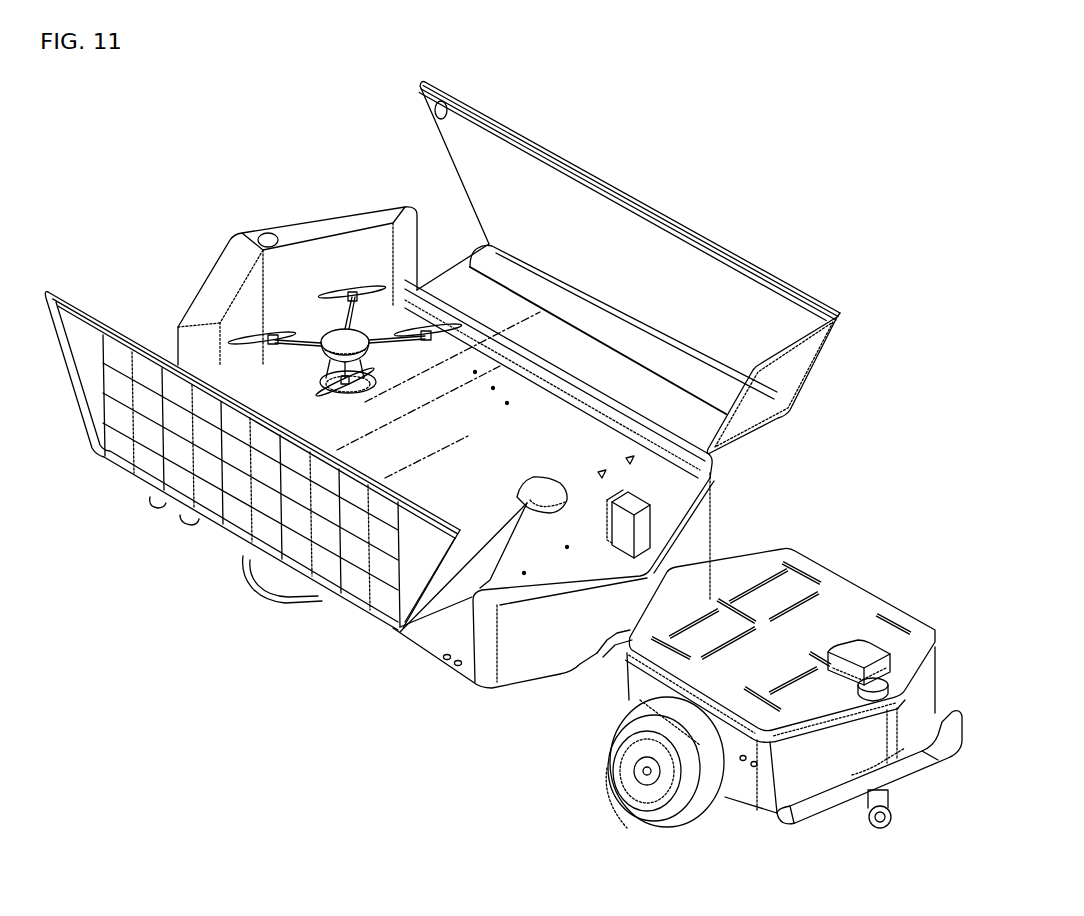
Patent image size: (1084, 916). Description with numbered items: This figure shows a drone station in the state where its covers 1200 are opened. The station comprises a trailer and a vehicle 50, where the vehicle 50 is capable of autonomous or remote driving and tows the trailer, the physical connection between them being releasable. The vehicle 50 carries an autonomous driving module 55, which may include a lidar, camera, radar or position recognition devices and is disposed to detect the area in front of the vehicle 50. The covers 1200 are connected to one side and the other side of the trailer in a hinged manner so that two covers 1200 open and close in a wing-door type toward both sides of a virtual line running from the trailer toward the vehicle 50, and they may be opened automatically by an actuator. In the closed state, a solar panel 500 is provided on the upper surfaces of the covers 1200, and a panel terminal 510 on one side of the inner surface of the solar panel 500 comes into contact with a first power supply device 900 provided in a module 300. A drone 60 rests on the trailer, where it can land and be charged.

The vehicle 50 is at (850, 545).
The autonomous driving module 55 is at (870, 647).
The drone 60 is at (303, 317).
The module 300 is at (312, 208).
The solar panel 500 is at (353, 580).
The panel terminal 510 is at (436, 110).
The first power supply device 900 is at (267, 233).
The cover 1200 is at (642, 198).